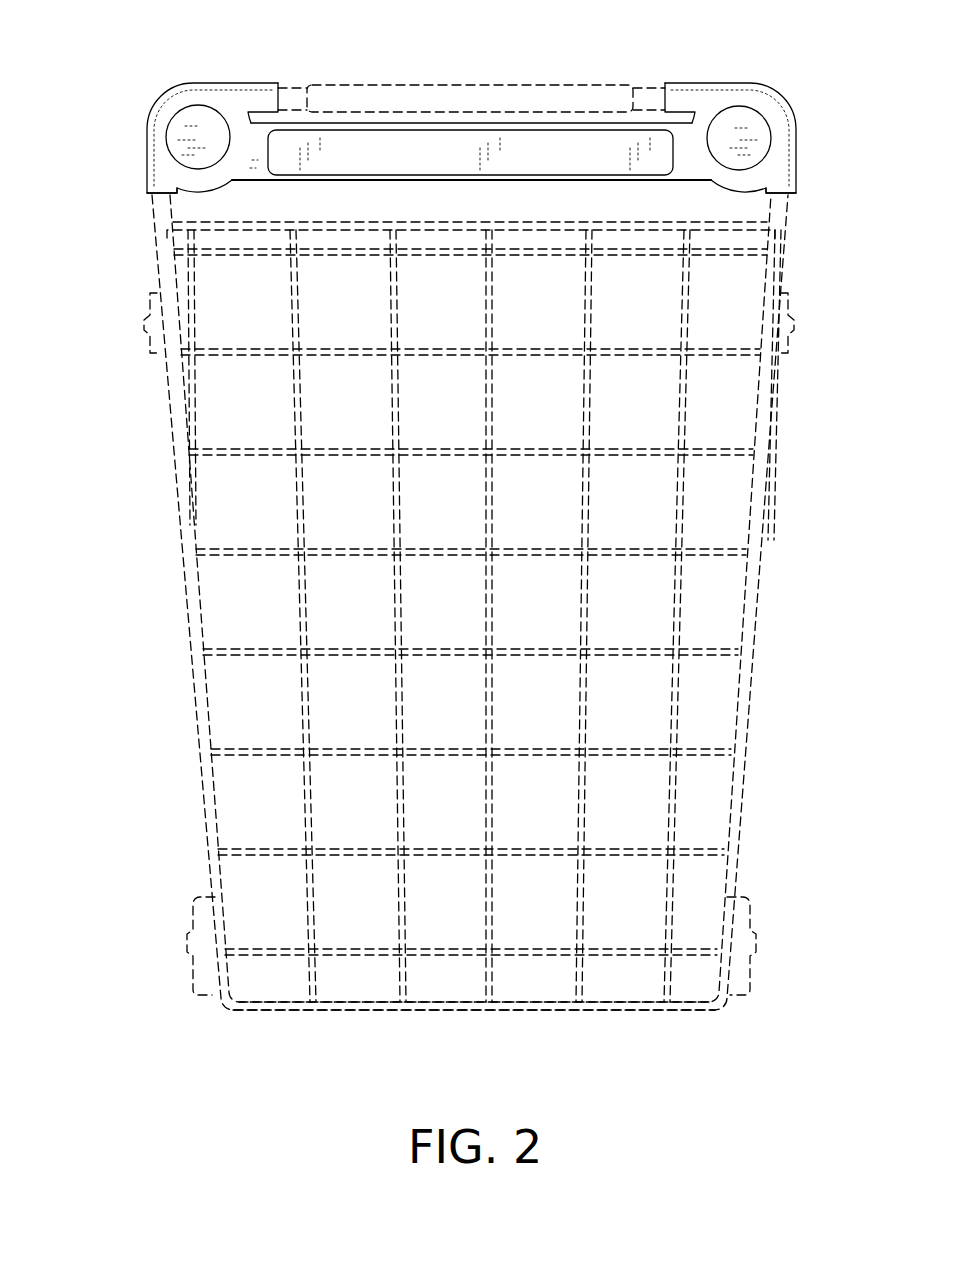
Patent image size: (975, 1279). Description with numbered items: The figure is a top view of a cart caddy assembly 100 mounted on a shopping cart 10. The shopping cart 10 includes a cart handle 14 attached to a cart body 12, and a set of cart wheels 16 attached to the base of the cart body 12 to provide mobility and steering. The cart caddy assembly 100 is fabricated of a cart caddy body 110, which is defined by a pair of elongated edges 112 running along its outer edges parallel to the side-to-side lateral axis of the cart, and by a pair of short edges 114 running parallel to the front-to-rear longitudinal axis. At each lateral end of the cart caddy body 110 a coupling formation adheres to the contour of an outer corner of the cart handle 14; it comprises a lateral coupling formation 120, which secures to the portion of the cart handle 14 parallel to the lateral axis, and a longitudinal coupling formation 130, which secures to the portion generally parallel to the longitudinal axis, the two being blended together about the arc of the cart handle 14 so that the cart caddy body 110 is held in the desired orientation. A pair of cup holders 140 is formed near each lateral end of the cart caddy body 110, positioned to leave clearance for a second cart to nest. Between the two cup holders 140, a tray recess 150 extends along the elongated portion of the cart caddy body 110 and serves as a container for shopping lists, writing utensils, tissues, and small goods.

The shopping cart 10 is at (212, 1028).
The cart body 12 is at (456, 1012).
The cart handle 14 is at (645, 82).
The cart wheels 16 is at (748, 978).
The cart caddy assembly 100 is at (498, 199).
The cart caddy body 110 is at (340, 122).
The elongated edges 112 is at (450, 118).
The short edges 114 is at (147, 152).
The lateral coupling formation 120 is at (252, 98).
The longitudinal coupling formation 130 is at (152, 176).
The cup holders 140 is at (194, 126).
The tray recess 150 is at (488, 147).